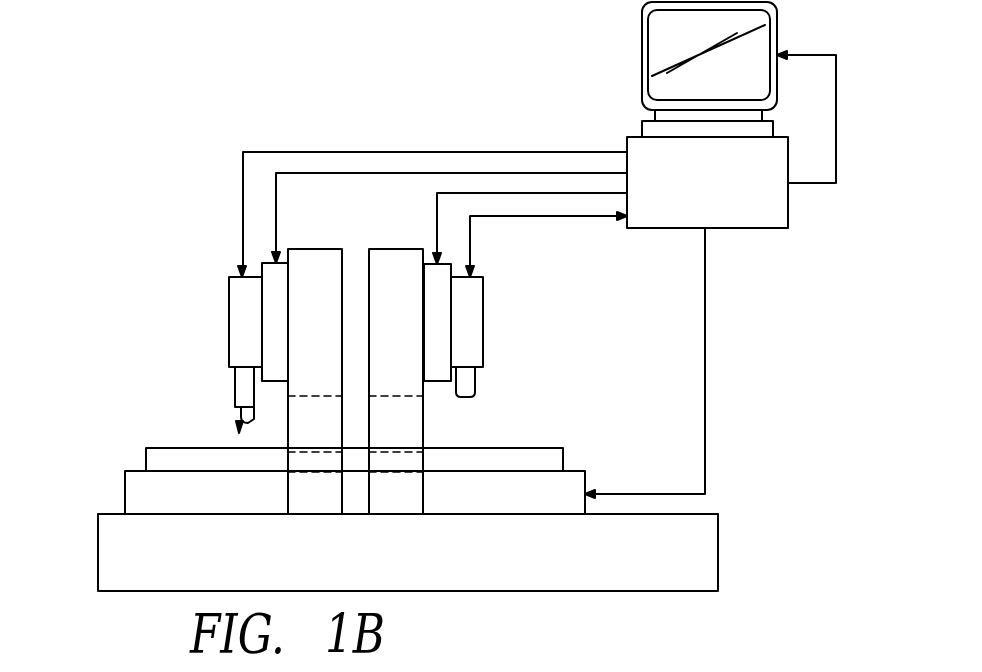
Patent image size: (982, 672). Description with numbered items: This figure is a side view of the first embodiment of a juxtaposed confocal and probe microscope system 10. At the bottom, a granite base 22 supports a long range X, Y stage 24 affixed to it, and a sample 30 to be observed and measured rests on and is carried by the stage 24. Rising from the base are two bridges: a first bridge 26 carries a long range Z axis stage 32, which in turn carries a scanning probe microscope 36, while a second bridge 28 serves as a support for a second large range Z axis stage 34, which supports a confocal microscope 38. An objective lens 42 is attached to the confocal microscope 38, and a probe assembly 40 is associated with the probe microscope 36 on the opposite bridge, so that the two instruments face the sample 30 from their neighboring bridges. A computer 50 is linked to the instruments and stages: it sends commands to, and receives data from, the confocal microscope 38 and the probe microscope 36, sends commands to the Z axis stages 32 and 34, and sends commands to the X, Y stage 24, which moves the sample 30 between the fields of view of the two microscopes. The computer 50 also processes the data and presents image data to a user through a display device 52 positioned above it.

The microscope system 10 is at (138, 216).
The granite base 22 is at (697, 547).
The long range X, Y stage 24 is at (129, 487).
The sample 30 is at (147, 452).
The first bridge 26 is at (317, 267).
The second bridge 28 is at (398, 266).
The long range Z axis stage 32 is at (273, 296).
The second large range Z axis stage 34 is at (437, 296).
The scanning probe microscope 36 is at (243, 332).
The confocal microscope 38 is at (467, 332).
The probe assembly 40 is at (235, 423).
The objective lens 42 is at (466, 377).
The computer 50 is at (770, 228).
The display device 52 is at (659, 24).